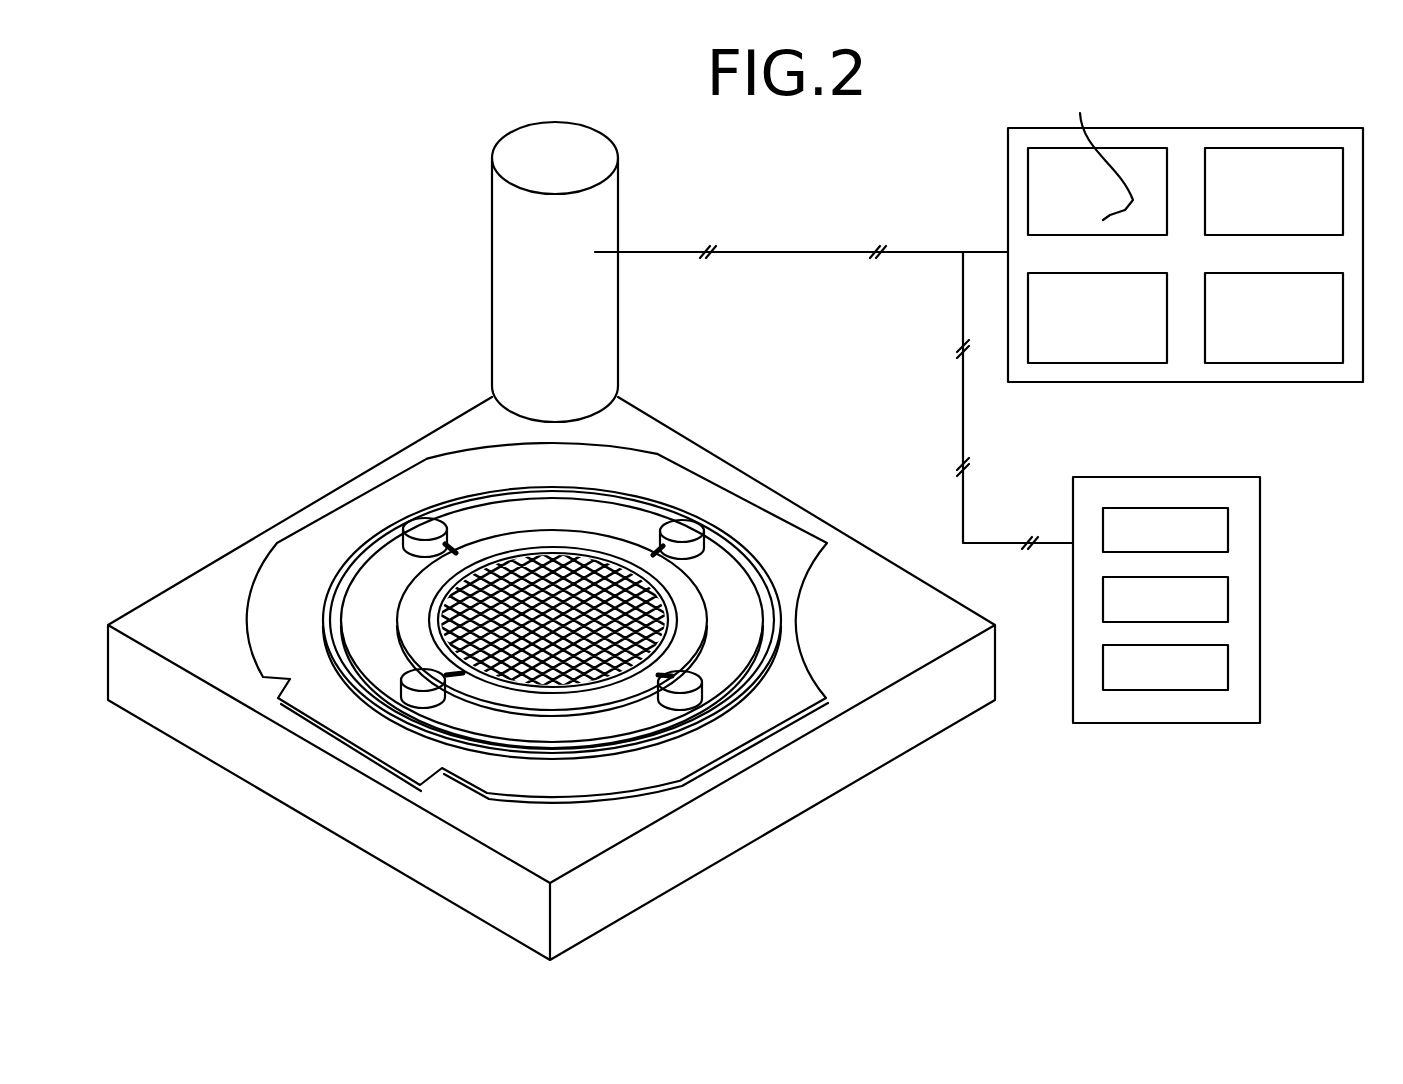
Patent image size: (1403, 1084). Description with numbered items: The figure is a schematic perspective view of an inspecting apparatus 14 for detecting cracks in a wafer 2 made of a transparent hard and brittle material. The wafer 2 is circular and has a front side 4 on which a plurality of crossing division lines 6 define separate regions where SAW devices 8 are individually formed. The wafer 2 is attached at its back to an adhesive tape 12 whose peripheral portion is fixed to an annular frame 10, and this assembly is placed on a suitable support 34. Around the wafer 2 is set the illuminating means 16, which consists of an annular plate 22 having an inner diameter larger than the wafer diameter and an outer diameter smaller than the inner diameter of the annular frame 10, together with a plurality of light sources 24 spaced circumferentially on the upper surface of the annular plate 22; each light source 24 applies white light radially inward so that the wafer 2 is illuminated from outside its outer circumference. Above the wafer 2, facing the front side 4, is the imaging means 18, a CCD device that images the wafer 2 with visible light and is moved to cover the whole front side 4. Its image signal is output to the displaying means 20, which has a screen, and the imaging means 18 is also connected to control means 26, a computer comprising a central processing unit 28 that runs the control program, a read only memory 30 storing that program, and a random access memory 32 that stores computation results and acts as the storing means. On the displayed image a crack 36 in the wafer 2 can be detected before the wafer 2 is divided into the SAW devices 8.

The wafer 2 is at (428, 588).
The front side 4 is at (437, 614).
The division lines 6 is at (1188, 158).
The SAW devices 8 is at (447, 644).
The annular frame 10 is at (824, 655).
The adhesive tape 12 is at (757, 663).
The inspecting apparatus 14 is at (416, 246).
The illuminating means 16 is at (742, 560).
The imaging means 18 is at (505, 320).
The displaying means 20 is at (1258, 128).
The annular plate 22 is at (738, 616).
The light sources 24 is at (663, 550).
The control means 26 is at (1210, 477).
The central processing unit 28 is at (1232, 532).
The read only memory 30 is at (1232, 600).
The random access memory 32 is at (1232, 670).
The support 34 is at (637, 882).
The crack 36 is at (1098, 153).